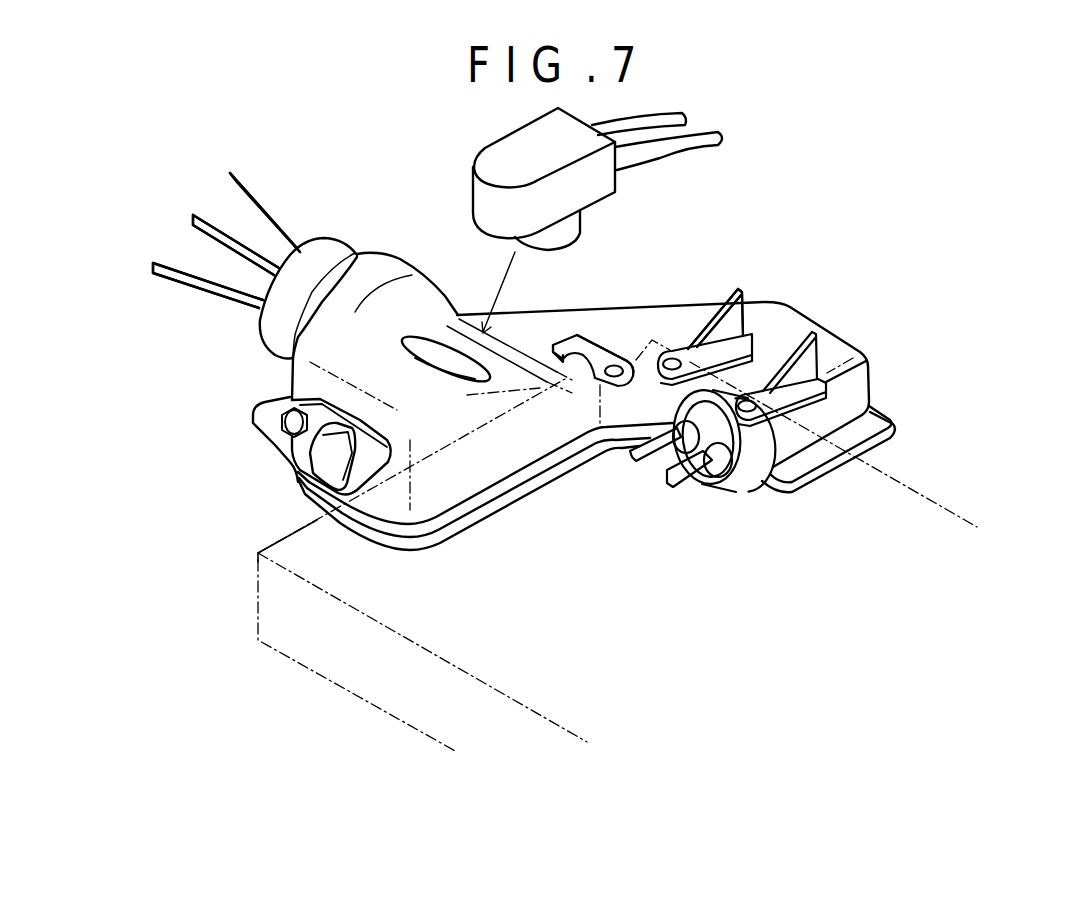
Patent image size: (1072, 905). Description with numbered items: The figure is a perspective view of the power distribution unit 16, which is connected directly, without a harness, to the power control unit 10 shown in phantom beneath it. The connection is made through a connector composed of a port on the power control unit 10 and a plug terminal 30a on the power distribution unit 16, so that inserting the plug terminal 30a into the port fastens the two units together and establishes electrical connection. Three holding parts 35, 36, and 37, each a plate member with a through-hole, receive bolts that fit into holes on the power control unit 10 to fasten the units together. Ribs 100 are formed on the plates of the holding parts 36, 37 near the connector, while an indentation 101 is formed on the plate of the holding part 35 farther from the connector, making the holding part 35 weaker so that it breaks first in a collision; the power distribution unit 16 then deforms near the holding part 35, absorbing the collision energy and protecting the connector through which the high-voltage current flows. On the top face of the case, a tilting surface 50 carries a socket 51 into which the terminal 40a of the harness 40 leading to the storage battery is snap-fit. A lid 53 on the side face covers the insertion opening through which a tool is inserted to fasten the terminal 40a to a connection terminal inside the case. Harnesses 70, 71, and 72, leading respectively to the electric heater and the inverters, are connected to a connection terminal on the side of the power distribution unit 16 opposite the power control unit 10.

The power control unit 10 is at (400, 685).
The power distribution unit 16 is at (699, 280).
The plug terminal 30a is at (637, 476).
The holding part 35 is at (603, 343).
The holding part 36 is at (733, 349).
The holding part 37 is at (853, 358).
The harness 40 is at (708, 141).
The terminal 40a is at (580, 224).
The tilting surface 50 is at (396, 337).
The socket 51 is at (450, 353).
The lid 53 is at (307, 448).
The harness 70 is at (208, 284).
The harness 71 is at (213, 228).
The harness 72 is at (277, 220).
The ribs 100 is at (748, 297).
The indentation 101 is at (572, 334).